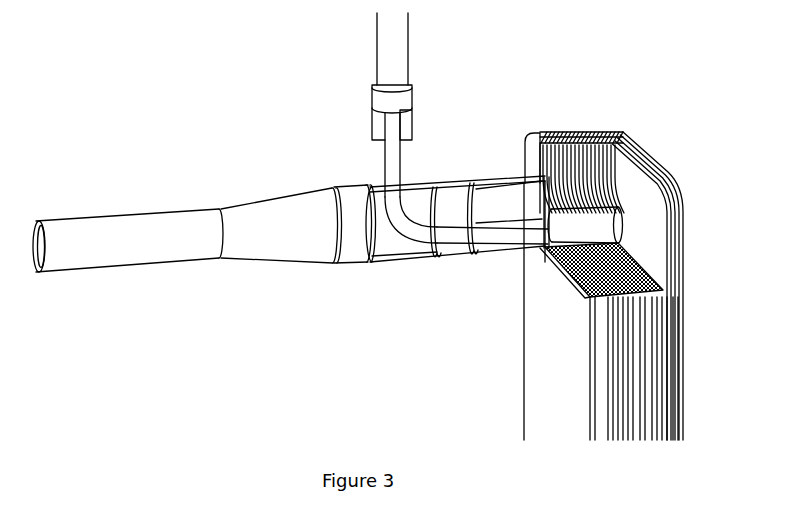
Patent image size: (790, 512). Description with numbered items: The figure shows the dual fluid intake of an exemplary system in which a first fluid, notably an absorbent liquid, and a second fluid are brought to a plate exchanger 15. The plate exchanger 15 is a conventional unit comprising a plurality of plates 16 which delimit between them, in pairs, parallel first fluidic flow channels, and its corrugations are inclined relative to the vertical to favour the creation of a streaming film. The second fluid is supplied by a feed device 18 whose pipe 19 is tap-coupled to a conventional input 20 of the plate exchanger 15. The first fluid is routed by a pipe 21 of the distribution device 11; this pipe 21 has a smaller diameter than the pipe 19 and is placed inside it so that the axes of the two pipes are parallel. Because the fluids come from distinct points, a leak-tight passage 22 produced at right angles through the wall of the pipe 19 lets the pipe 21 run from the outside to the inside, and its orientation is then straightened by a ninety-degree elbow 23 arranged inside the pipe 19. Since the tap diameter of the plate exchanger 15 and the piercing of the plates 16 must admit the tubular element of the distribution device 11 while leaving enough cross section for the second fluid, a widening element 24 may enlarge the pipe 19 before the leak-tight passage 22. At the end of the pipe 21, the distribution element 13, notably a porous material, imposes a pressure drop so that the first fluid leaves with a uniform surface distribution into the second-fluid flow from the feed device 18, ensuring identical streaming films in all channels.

The distribution device 11 is at (628, 207).
The distribution element 13 is at (583, 237).
The plate exchanger 15 is at (553, 387).
The plates 16 is at (645, 430).
The feed device 18 is at (500, 193).
The pipe 19 is at (485, 176).
The input 20 is at (547, 203).
The pipe 21 is at (463, 237).
The leak-tight passage 22 is at (390, 188).
The 90° elbow 23 is at (400, 217).
The widening element 24 is at (262, 208).